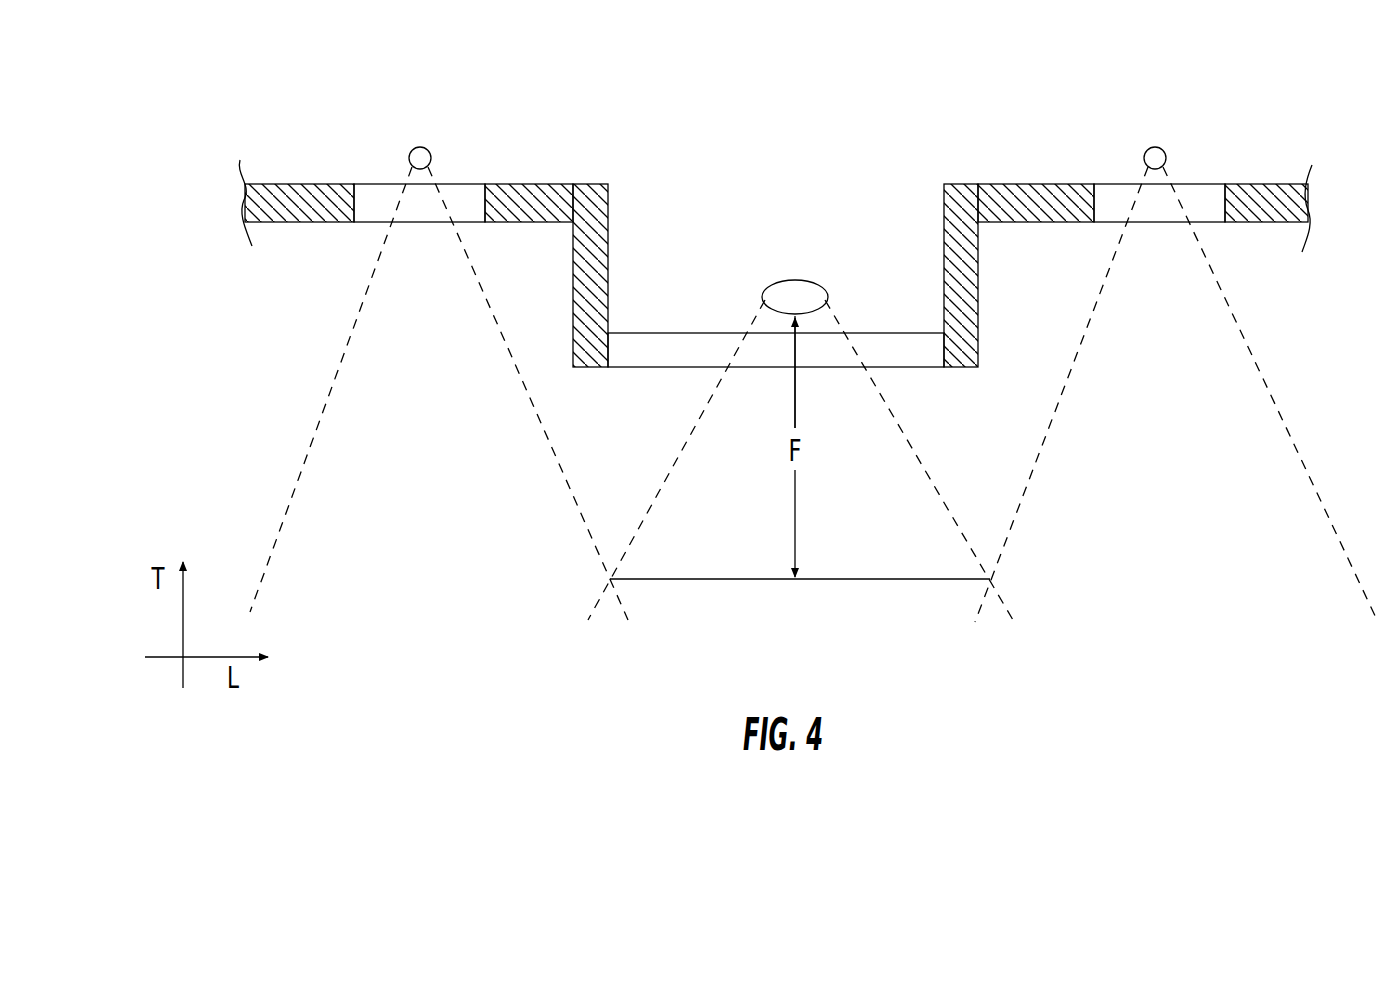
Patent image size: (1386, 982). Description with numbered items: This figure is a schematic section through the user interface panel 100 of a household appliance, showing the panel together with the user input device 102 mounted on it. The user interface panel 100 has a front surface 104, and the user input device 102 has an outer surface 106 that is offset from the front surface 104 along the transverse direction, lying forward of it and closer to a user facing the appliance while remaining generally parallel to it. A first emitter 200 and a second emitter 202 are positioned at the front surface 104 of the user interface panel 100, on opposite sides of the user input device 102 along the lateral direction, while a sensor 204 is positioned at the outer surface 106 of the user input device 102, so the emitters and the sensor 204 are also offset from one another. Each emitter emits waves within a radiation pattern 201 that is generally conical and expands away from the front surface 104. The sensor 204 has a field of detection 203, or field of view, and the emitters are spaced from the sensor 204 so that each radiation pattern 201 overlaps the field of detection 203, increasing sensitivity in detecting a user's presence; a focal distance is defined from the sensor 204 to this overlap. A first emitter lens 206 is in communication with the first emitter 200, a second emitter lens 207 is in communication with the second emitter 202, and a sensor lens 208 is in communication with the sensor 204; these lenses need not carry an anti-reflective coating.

The user interface panel 100 is at (746, 268).
The user input device 102 is at (978, 281).
The front surface 104 is at (280, 228).
The outer surface 106 is at (655, 372).
The first emitter 200 is at (409, 153).
The radiation pattern 201 is at (303, 462).
The second emitter 202 is at (1166, 152).
The field of detection 203 is at (606, 590).
The sensor 204 is at (795, 292).
The first emitter lens 206 is at (452, 193).
The second emitter lens 207 is at (1112, 184).
The sensor lens 208 is at (708, 340).